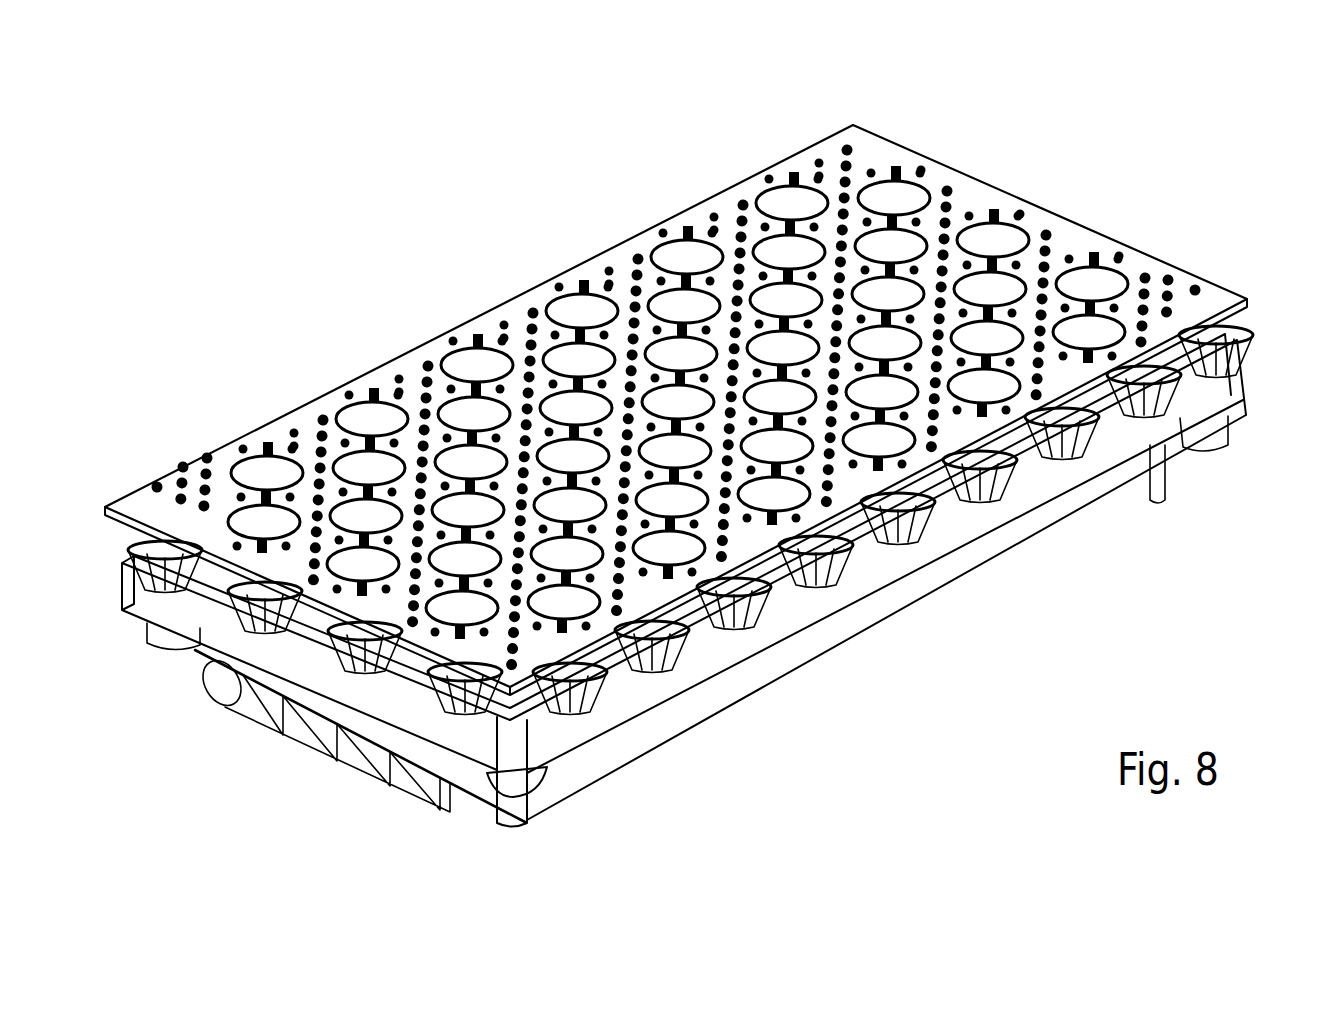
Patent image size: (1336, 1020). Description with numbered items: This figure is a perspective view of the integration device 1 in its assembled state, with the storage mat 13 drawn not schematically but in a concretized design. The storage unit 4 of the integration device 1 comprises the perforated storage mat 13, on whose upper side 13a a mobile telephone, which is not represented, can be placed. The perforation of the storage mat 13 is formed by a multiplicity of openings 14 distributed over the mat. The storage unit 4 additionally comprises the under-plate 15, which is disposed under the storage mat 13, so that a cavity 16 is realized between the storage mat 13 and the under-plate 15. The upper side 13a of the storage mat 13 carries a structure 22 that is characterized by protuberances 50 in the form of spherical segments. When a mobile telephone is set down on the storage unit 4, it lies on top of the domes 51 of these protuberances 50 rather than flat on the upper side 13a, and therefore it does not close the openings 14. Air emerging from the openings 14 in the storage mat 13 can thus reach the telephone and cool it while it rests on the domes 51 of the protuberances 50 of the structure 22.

The integration device 1 is at (714, 450).
The storage unit 4 is at (714, 384).
The storage mat 13 is at (1060, 233).
The upper side 13a is at (1107, 252).
The openings 14 is at (870, 153).
The under-plate 15 is at (1223, 395).
The cavity 16 is at (1125, 420).
The structure 22 is at (832, 160).
The protuberances 50 is at (567, 305).
The domes 51 is at (572, 303).